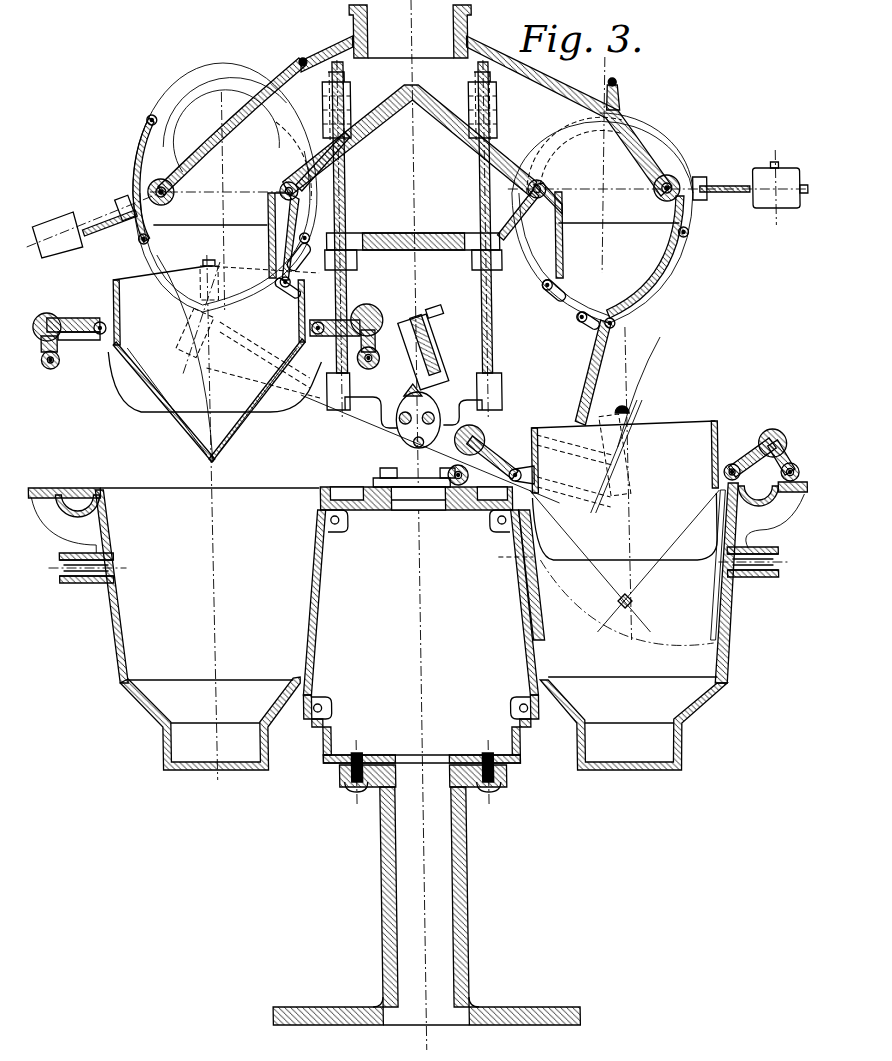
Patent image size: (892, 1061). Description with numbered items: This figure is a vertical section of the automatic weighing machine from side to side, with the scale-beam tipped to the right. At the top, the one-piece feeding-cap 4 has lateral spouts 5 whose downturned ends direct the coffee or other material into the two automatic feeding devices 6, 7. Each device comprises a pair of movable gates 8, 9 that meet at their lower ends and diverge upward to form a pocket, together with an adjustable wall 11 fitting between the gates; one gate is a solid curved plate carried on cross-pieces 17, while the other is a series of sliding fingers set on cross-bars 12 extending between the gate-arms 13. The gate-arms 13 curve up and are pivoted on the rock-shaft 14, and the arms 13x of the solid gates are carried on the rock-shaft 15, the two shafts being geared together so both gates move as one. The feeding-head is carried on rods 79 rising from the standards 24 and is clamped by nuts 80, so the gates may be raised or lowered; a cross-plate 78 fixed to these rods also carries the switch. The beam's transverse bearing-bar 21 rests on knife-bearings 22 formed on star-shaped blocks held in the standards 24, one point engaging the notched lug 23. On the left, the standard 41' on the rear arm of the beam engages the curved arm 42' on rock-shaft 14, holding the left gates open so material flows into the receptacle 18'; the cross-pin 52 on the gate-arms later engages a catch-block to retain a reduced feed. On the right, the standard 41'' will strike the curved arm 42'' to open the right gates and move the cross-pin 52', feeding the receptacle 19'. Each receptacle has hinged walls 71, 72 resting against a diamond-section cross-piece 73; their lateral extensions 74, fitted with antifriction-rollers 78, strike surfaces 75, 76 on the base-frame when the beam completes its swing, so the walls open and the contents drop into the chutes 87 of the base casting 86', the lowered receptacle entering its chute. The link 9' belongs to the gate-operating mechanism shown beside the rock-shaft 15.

The feeding-cap 4 is at (426, 44).
The lateral spouts or branches 5 is at (425, 240).
The automatic feeding device 6 is at (200, 218).
The automatic feeding device 7 is at (616, 216).
The movable gate 8 is at (131, 160).
The movable gate 9 is at (420, 199).
The drive link 9' is at (519, 243).
The adjustable wall 11 is at (405, 266).
The cross-bars 12 is at (303, 245).
The gate-arms 13 is at (195, 107).
The arms of the solid feeding-gates 13x is at (652, 122).
The rock-shaft 14 is at (166, 193).
The rock-shaft 15 is at (280, 185).
The cross-pieces 17 is at (145, 121).
The receptacle 18' is at (215, 358).
The receptacle 19' is at (608, 491).
The transverse bearing-bar 21 is at (416, 325).
The knife-bearings 22 is at (430, 392).
The notched lug 23 is at (428, 380).
The brackets or standards 24 is at (446, 407).
The standard 41' is at (268, 236).
The standard 41'' is at (579, 372).
The curved arm 42' is at (344, 161).
The curved arm 42'' is at (564, 230).
The cross-pin 52 is at (292, 47).
The cross-pin 52' is at (634, 83).
The hinged wall 71 is at (532, 608).
The hinged wall 72 is at (706, 594).
The cross-piece 73 is at (625, 603).
The lateral extensions 74 is at (76, 316).
The surface on the base-frame 75 is at (48, 490).
The surface on the base-frame 76 is at (365, 487).
The antifriction-rollers / cross-plate 78 is at (416, 235).
The rods 79 is at (478, 194).
The nuts 80 is at (460, 113).
The casting 86' is at (420, 658).
The lateral extensions / chutes 87 is at (419, 629).